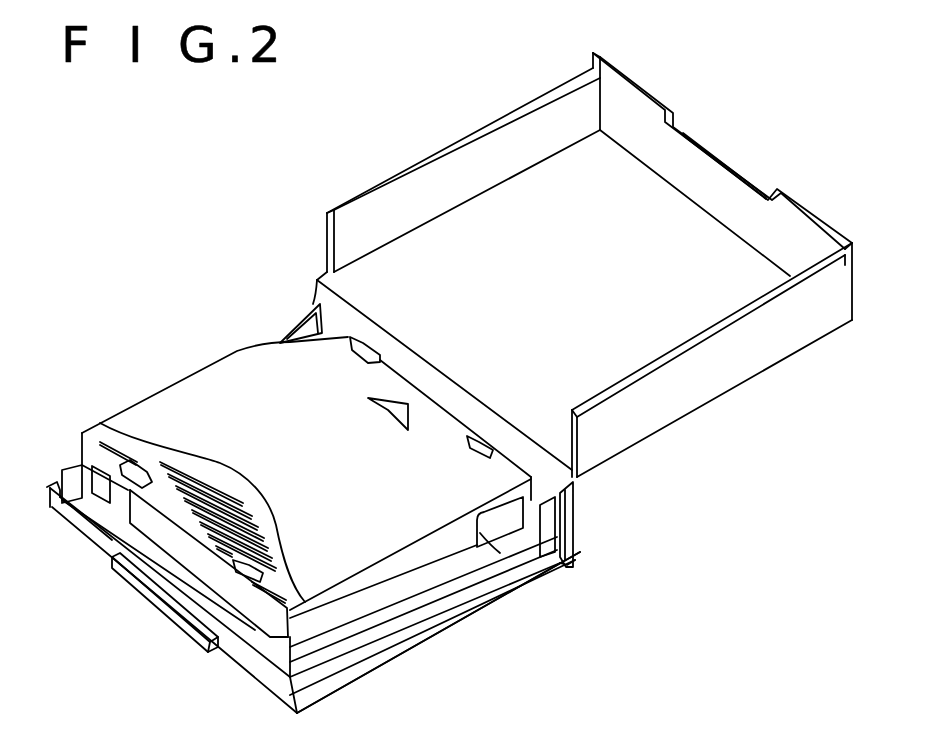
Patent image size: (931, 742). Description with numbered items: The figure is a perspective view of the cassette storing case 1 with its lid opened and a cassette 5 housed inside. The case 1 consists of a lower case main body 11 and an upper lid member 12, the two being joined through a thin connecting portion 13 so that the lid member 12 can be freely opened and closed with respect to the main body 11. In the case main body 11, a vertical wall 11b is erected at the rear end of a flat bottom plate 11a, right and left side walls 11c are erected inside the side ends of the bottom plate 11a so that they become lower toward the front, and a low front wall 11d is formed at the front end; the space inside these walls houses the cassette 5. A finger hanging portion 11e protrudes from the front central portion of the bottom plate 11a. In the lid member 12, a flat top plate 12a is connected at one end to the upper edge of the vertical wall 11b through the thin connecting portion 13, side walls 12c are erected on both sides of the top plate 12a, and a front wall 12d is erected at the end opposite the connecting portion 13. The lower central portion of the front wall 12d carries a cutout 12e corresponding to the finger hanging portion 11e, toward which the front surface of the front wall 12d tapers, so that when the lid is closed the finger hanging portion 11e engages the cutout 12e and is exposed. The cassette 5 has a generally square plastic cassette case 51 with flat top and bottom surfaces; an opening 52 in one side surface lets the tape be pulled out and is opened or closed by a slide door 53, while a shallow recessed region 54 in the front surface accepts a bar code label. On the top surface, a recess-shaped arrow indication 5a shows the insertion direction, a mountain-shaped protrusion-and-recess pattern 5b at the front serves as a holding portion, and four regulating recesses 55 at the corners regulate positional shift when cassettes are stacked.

The cassette storing case 1 is at (445, 112).
The cassette 5 is at (238, 350).
The arrow indication 5a is at (407, 405).
The protrusion-and-recess pattern 5b is at (247, 495).
The case main body 11 is at (478, 620).
The bottom plate 11a is at (365, 670).
The vertical wall 11b is at (568, 515).
The side walls 11c is at (78, 463).
The front wall 11d is at (85, 515).
The finger hanging portion 11e is at (147, 590).
The lid member 12 is at (707, 412).
The top plate 12a is at (683, 320).
The side walls 12c is at (380, 190).
The front wall 12d is at (637, 83).
The cutout 12e is at (727, 160).
The thin connecting portion 13 is at (445, 383).
The cassette case 51 is at (175, 397).
The opening 52 is at (507, 520).
The slide door 53 is at (567, 565).
The region 54 is at (245, 625).
The regulating recesses 55 is at (370, 352).